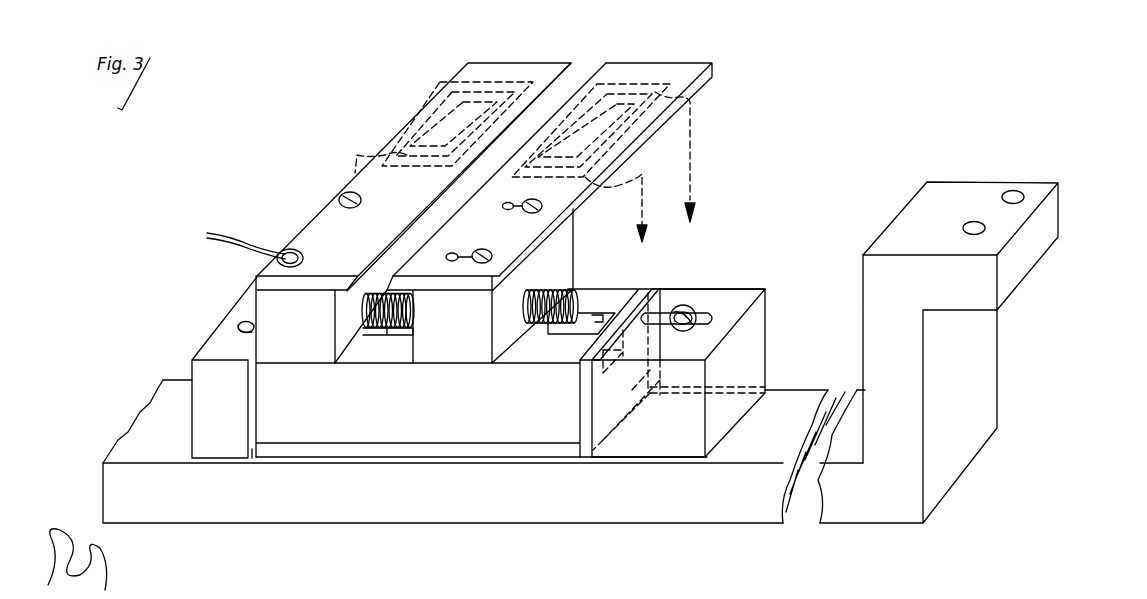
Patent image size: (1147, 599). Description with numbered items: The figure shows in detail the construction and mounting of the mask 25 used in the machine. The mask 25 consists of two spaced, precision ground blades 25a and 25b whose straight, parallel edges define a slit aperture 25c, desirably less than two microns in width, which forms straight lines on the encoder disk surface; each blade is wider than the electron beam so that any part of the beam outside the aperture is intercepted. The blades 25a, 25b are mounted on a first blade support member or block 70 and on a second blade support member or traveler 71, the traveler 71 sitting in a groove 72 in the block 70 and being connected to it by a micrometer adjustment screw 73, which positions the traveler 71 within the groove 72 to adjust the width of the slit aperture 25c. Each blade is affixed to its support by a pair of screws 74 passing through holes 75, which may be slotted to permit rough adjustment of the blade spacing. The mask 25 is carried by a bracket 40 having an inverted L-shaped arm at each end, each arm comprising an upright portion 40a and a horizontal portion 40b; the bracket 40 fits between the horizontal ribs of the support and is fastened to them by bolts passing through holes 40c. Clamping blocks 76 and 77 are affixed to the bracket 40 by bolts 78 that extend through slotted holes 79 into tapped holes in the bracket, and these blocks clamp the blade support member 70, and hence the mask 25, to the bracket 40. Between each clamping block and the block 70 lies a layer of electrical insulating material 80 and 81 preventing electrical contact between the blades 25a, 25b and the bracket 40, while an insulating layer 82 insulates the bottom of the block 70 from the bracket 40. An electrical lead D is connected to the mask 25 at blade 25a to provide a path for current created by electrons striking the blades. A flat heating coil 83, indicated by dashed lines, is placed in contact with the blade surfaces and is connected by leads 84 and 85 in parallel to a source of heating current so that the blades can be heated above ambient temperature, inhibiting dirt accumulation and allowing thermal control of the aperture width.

The mask 25 is at (737, 85).
The blade 25a is at (515, 63).
The blade 25b is at (630, 63).
The slit aperture 25c is at (588, 63).
The bracket 40 is at (678, 523).
The upright portion 40a is at (978, 358).
The horizontal portion 40b is at (968, 190).
The holes 40c is at (1022, 192).
The first blade support member 70 is at (340, 418).
The traveler 71 is at (552, 257).
The groove 72 is at (600, 313).
The micrometer adjustment screw 73 is at (590, 317).
The screws 74 is at (343, 198).
The holes 75 is at (450, 252).
The clamping block 76 is at (192, 346).
The clamping block 77 is at (740, 350).
The bolts 78 is at (240, 325).
The slotted holes 79 is at (705, 319).
The layer of electrical insulating material 80 is at (252, 458).
The layer of electrical insulating material 81 is at (588, 458).
The insulating layer 82 is at (475, 455).
The heating coil 83 is at (432, 115).
The lead 84 is at (442, 90).
The lead 85 is at (365, 153).
The electrical lead D is at (245, 236).